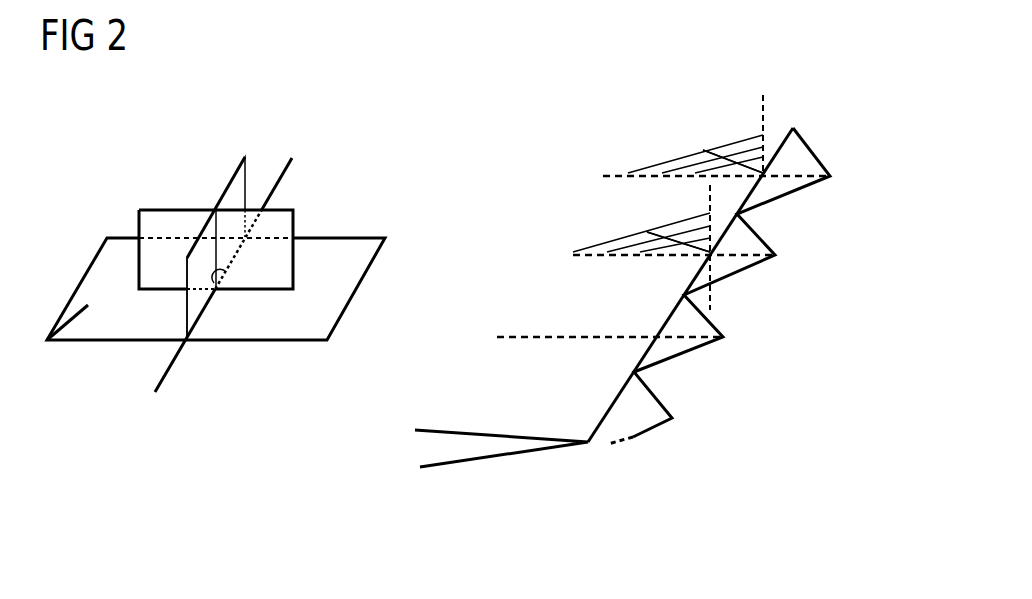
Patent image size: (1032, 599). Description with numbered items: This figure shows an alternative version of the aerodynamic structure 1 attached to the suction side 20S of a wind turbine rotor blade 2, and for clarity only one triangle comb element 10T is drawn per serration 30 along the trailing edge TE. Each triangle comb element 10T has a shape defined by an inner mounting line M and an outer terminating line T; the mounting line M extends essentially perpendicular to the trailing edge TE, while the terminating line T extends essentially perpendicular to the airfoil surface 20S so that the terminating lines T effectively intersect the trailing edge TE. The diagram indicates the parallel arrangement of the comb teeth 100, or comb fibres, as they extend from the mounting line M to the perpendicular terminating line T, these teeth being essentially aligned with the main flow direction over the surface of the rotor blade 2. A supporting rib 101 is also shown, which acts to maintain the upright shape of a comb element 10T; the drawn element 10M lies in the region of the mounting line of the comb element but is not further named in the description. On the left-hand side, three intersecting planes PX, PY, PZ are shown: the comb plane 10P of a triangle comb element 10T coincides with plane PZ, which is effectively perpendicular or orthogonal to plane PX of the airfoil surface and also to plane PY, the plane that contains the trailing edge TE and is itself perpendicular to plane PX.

The aerodynamic structure 1 is at (878, 70).
The wind turbine rotor blade 2 is at (479, 492).
The suction side 20S is at (90, 303).
The comb plane 10P is at (272, 244).
The plane PZ is at (283, 228).
The plane PX is at (327, 320).
The plane PY is at (238, 193).
The mounting line M is at (153, 290).
The terminating line T is at (233, 285).
The trailing edge TE is at (172, 373).
The serration 30 is at (807, 160).
The triangle comb element 10T is at (634, 134).
The mesa portion 10M is at (577, 287).
The comb teeth 100 is at (703, 158).
The supporting rib 101 is at (722, 172).